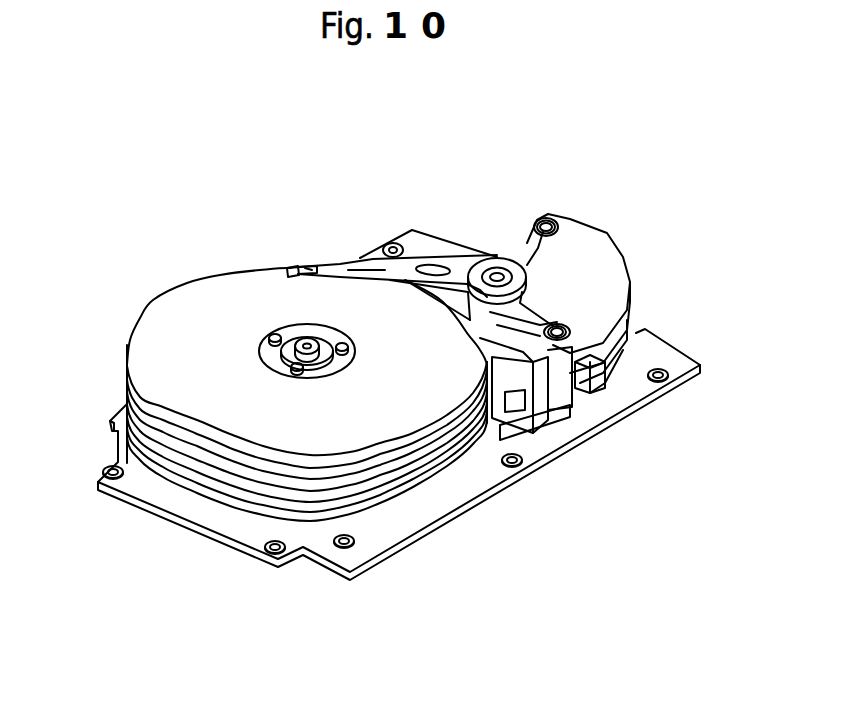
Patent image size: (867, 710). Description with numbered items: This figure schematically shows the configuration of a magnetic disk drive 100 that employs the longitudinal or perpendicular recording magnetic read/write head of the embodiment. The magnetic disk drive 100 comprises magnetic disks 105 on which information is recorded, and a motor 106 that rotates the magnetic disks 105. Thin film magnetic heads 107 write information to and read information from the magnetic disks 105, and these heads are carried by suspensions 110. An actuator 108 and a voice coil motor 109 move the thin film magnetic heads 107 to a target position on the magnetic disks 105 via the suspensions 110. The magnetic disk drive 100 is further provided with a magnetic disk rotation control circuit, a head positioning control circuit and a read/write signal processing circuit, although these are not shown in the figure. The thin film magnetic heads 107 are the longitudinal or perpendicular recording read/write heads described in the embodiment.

The magnetic disk drive 100 is at (227, 215).
The magnetic disks 105 is at (207, 368).
The motor 106 is at (294, 348).
The thin film magnetic heads 107 is at (293, 264).
The actuator 108 is at (497, 277).
The voice coil motor 109 is at (642, 336).
The suspensions 110 is at (375, 258).